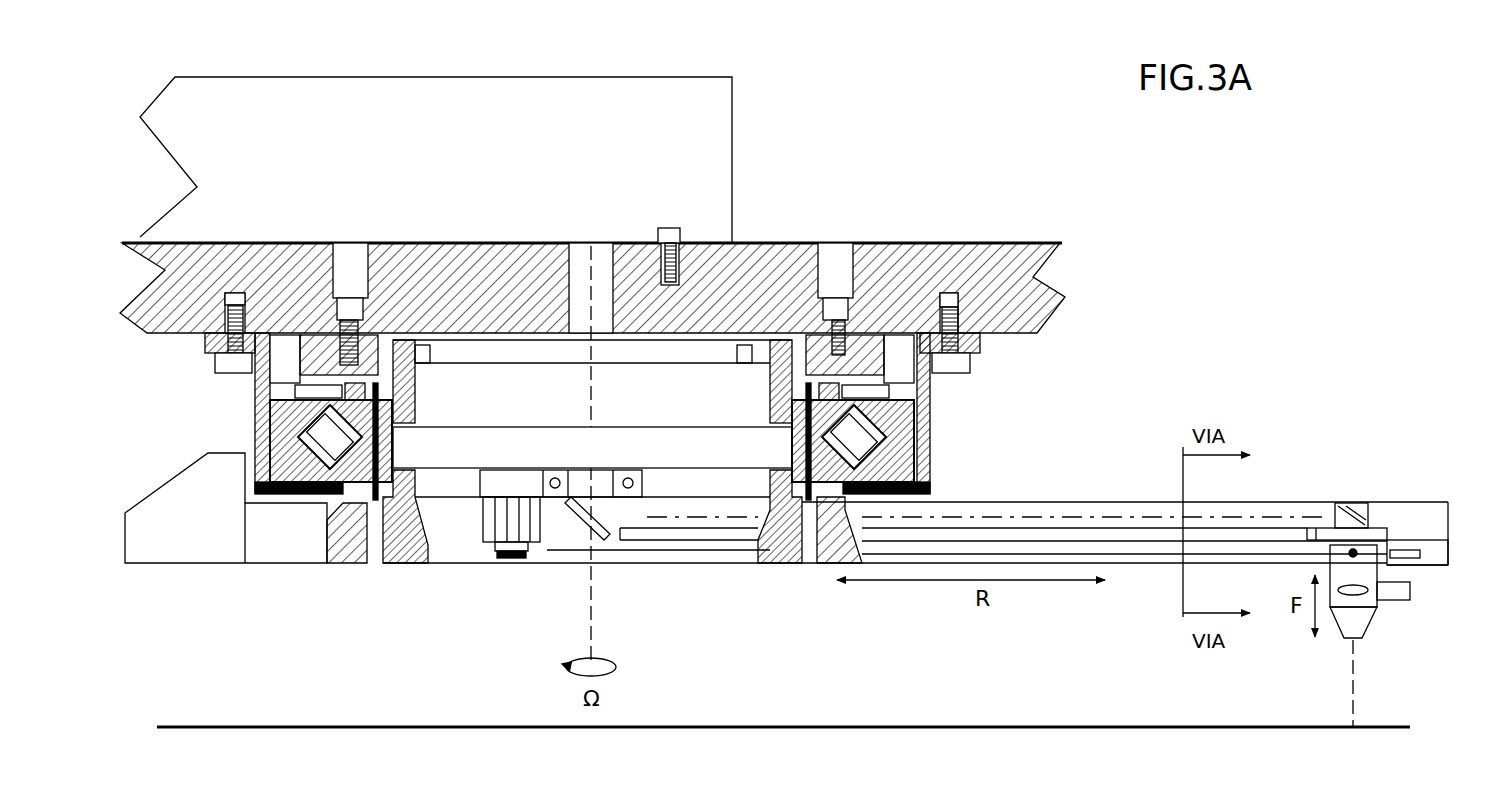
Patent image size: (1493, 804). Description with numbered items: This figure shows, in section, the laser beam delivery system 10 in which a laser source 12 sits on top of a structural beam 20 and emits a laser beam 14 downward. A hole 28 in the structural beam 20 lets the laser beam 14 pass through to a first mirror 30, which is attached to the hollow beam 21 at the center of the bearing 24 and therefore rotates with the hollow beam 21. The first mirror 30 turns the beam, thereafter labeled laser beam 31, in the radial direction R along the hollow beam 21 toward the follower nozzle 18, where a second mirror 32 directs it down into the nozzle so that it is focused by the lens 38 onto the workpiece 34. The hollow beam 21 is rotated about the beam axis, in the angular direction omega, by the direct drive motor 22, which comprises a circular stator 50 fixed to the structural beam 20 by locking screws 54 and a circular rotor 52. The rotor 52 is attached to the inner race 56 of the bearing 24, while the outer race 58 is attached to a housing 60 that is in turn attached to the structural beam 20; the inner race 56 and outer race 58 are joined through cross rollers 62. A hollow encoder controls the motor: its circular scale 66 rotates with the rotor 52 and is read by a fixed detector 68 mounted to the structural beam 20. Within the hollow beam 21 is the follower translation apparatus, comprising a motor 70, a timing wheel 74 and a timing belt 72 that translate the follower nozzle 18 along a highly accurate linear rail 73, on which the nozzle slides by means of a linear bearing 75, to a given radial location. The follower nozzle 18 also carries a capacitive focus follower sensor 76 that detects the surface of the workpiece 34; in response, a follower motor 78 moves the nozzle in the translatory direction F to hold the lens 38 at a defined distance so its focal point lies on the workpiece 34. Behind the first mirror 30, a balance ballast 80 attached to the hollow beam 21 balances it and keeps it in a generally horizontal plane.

The laser beam delivery system 10 is at (873, 625).
The laser source 12 is at (705, 103).
The laser beam 14 is at (582, 270).
The follower nozzle 18 is at (1300, 628).
The structural beam 20 is at (973, 262).
The hollow beam 21 is at (1003, 507).
The direct drive motor 22 is at (387, 347).
The bearing 24 is at (315, 500).
The hole 28 is at (602, 262).
The first mirror 30 is at (581, 537).
The laser beam 31 is at (1112, 515).
The second mirror 32 is at (1348, 507).
The workpiece 34 is at (1387, 727).
The lens 38 is at (1365, 596).
The circular stator 50 is at (872, 337).
The circular rotor 52 is at (776, 393).
The locking screws 54 is at (262, 412).
The inner race 56 is at (798, 438).
The outer race 58 is at (930, 484).
The housing 60 is at (928, 402).
The cross rollers 62 is at (860, 440).
The circular scale 66 is at (750, 346).
The detector 68 is at (737, 348).
The motor 70 is at (482, 518).
The timing belt 72 is at (1103, 557).
The linear rail 73 is at (1063, 532).
The timing wheel 74 is at (1410, 563).
The linear bearing 75 is at (1307, 530).
The capacitive focus follower sensor 76 is at (1346, 639).
The follower motor 78 is at (1393, 598).
The balance ballast 80 is at (208, 530).